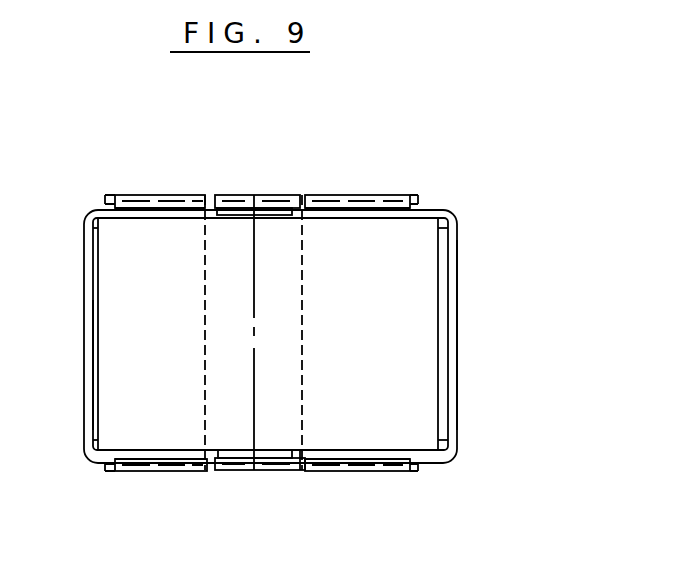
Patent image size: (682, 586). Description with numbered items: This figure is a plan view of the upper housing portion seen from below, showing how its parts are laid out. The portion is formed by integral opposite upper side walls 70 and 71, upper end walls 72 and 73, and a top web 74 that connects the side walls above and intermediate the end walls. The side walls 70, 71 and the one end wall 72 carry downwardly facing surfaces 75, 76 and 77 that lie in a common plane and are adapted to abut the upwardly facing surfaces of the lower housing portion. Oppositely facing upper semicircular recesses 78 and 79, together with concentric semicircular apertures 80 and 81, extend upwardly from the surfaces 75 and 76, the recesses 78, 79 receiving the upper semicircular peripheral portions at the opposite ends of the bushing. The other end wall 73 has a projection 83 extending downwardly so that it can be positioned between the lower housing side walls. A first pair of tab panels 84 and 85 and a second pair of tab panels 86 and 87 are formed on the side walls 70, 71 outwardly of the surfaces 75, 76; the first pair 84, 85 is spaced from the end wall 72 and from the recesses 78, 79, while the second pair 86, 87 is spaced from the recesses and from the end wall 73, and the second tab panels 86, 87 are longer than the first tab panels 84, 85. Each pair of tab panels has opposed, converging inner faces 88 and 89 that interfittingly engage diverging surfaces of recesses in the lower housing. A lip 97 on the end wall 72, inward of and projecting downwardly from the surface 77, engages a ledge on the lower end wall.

The upper side wall 70 is at (355, 218).
The upper side wall 71 is at (330, 452).
The upper end wall 72 is at (86, 262).
The upper end wall 73 is at (458, 301).
The top web 74 is at (306, 325).
The downwardly facing surface 75 is at (383, 210).
The downwardly facing surface 76 is at (373, 451).
The downwardly facing surface 77 is at (93, 322).
The upper semicircular recess 78 is at (222, 216).
The upper semicircular recess 79 is at (222, 456).
The semicircular aperture 80 is at (275, 195).
The semicircular aperture 81 is at (275, 471).
The projection 83 is at (432, 358).
The first tab panel 84 is at (155, 195).
The first tab panel 85 is at (145, 472).
The second tab panel 86 is at (328, 197).
The second tab panel 87 is at (358, 471).
The converging inner face 88 is at (160, 208).
The converging inner face 89 is at (132, 459).
The lip 97 is at (96, 386).